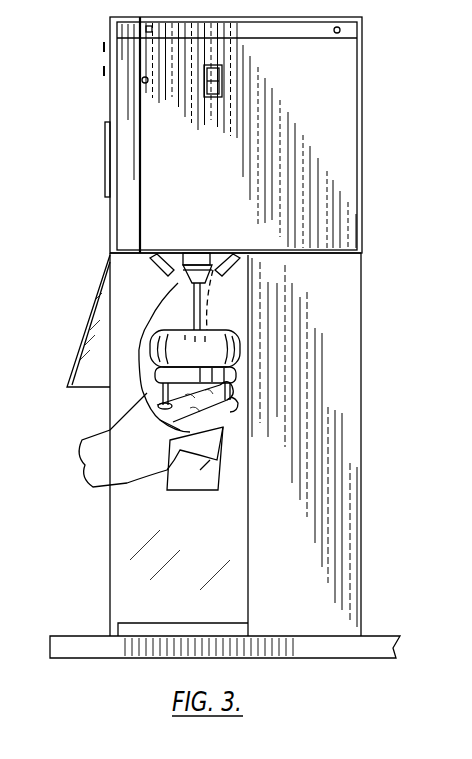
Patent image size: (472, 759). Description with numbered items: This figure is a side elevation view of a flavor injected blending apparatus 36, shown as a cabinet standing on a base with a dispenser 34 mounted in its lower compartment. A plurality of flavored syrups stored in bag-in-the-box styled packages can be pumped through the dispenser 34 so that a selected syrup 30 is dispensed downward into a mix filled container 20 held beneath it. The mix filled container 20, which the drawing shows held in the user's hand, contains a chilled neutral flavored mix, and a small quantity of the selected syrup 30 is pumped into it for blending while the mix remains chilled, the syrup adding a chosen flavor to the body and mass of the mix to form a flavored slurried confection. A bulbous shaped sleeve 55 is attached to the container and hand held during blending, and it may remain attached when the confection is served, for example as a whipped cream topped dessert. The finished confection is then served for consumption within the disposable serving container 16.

The flavor injected blending apparatus 36 is at (77, 152).
The dispenser 34 is at (160, 245).
The selected syrup 30 is at (240, 272).
The bulbous shaped sleeve 55 is at (207, 355).
The mix filled container 20 is at (233, 383).
The disposable serving container 16 is at (158, 393).